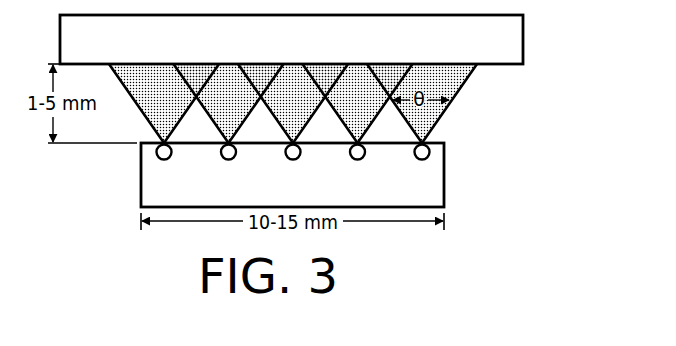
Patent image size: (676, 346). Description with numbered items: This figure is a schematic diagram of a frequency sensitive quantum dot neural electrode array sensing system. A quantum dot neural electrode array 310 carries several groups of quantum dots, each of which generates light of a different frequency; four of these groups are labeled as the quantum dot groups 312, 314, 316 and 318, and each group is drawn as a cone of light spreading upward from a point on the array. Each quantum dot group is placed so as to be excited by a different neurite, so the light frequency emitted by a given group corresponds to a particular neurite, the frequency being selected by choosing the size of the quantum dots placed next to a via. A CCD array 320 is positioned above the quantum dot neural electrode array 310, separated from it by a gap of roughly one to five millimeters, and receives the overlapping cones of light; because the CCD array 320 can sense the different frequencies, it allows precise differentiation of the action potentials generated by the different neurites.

The quantum dot neural electrode array 310 is at (444, 188).
The quantum dot group 312 is at (149, 106).
The quantum dot group 314 is at (212, 106).
The quantum dot group 316 is at (276, 106).
The quantum dot group 318 is at (340, 106).
The CCD array 320 is at (523, 40).